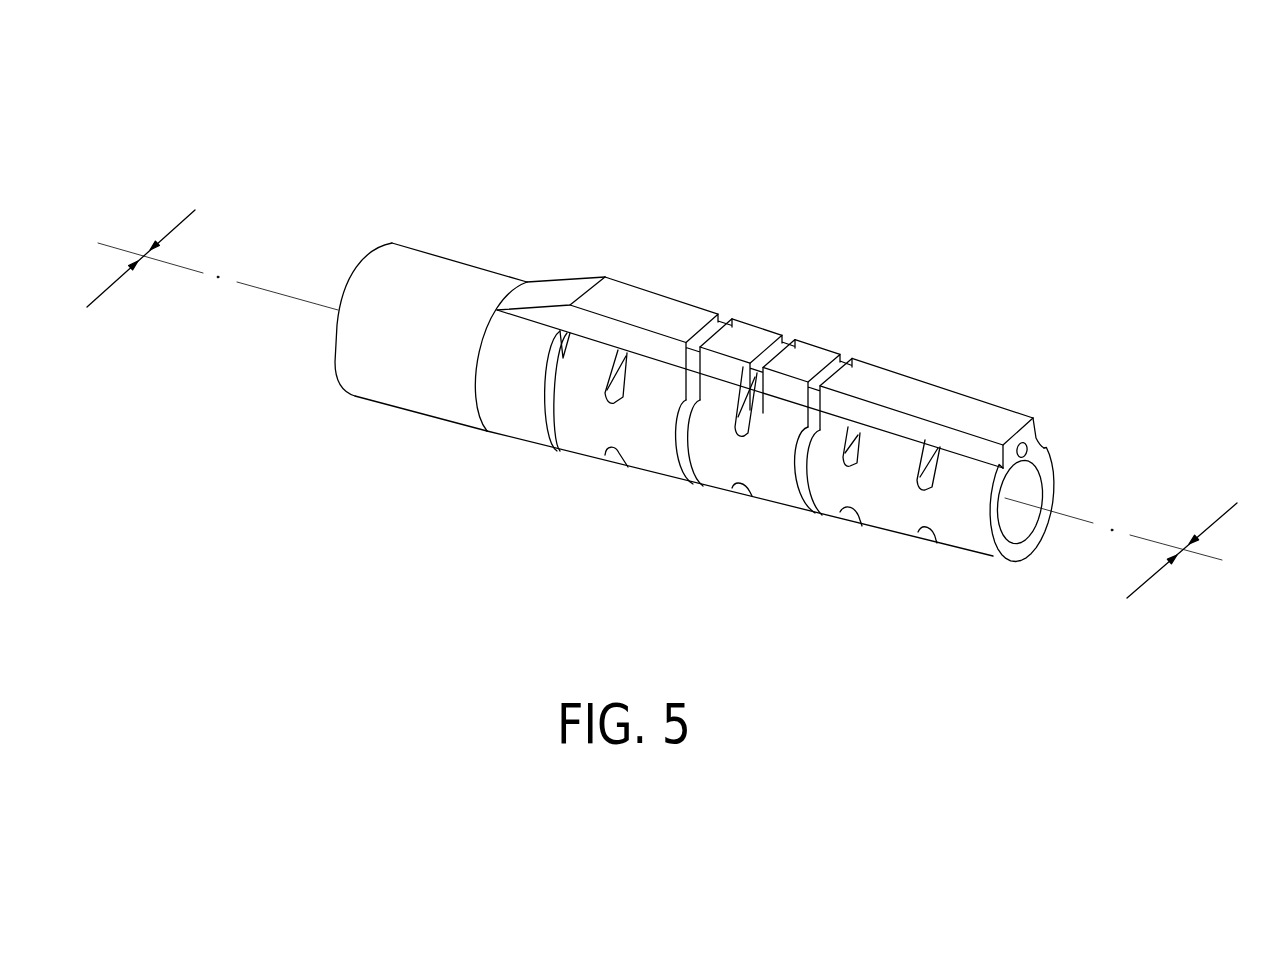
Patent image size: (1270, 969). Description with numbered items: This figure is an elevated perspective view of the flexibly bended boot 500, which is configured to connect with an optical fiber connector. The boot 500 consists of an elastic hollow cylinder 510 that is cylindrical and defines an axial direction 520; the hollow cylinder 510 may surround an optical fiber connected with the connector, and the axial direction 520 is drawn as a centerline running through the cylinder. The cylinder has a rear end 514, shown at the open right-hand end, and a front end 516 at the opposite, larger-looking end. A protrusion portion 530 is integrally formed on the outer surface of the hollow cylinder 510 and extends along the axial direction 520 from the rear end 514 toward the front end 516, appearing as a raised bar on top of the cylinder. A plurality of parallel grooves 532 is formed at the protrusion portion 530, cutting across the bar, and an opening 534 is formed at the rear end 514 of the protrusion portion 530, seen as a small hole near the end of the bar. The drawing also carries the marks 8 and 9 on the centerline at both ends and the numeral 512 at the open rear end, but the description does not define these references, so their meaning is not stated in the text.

The flexibly bended boot 500 is at (420, 146).
The elastic hollow cylinder 510 is at (592, 420).
The central bore 512 is at (1027, 477).
The rear end 514 is at (997, 543).
The front end 516 is at (336, 352).
The axial direction 520 is at (1130, 535).
The protrusion portion 530 is at (790, 346).
The parallel grooves 532 is at (700, 322).
The opening 534 is at (1023, 442).
The section line 8- 8 is at (662, 415).
The section line 9- 9 is at (692, 387).